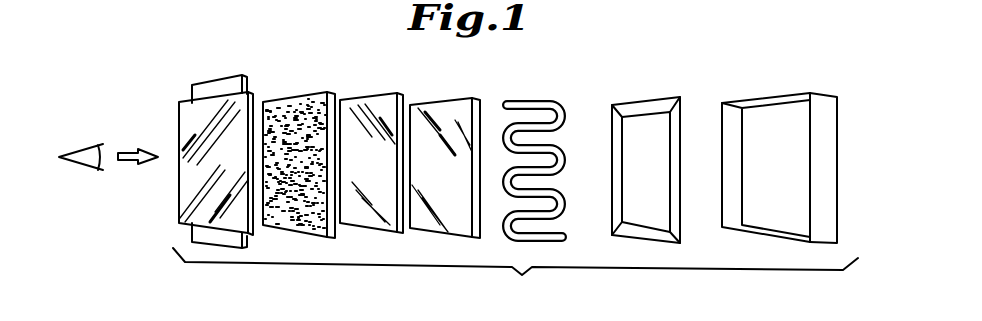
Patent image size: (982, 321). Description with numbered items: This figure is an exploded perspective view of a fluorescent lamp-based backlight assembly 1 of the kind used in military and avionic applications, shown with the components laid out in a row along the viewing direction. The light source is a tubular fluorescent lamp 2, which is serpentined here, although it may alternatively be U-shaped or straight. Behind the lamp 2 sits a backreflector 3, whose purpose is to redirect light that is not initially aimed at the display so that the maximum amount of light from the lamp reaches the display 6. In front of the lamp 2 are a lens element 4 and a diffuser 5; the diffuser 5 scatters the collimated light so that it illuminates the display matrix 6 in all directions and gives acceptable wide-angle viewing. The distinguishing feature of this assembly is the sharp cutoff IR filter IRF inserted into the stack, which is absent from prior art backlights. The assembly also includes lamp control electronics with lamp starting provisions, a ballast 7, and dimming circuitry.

The backlight assembly 1 is at (522, 276).
The tubular fluorescent lamp 2 is at (530, 97).
The backreflector 3 is at (628, 100).
The lens element 4 is at (422, 103).
The diffuser 5 is at (293, 100).
The display 6 is at (218, 83).
The ballast 7 is at (820, 110).
The sharp cutoff IR filter IRF is at (356, 97).